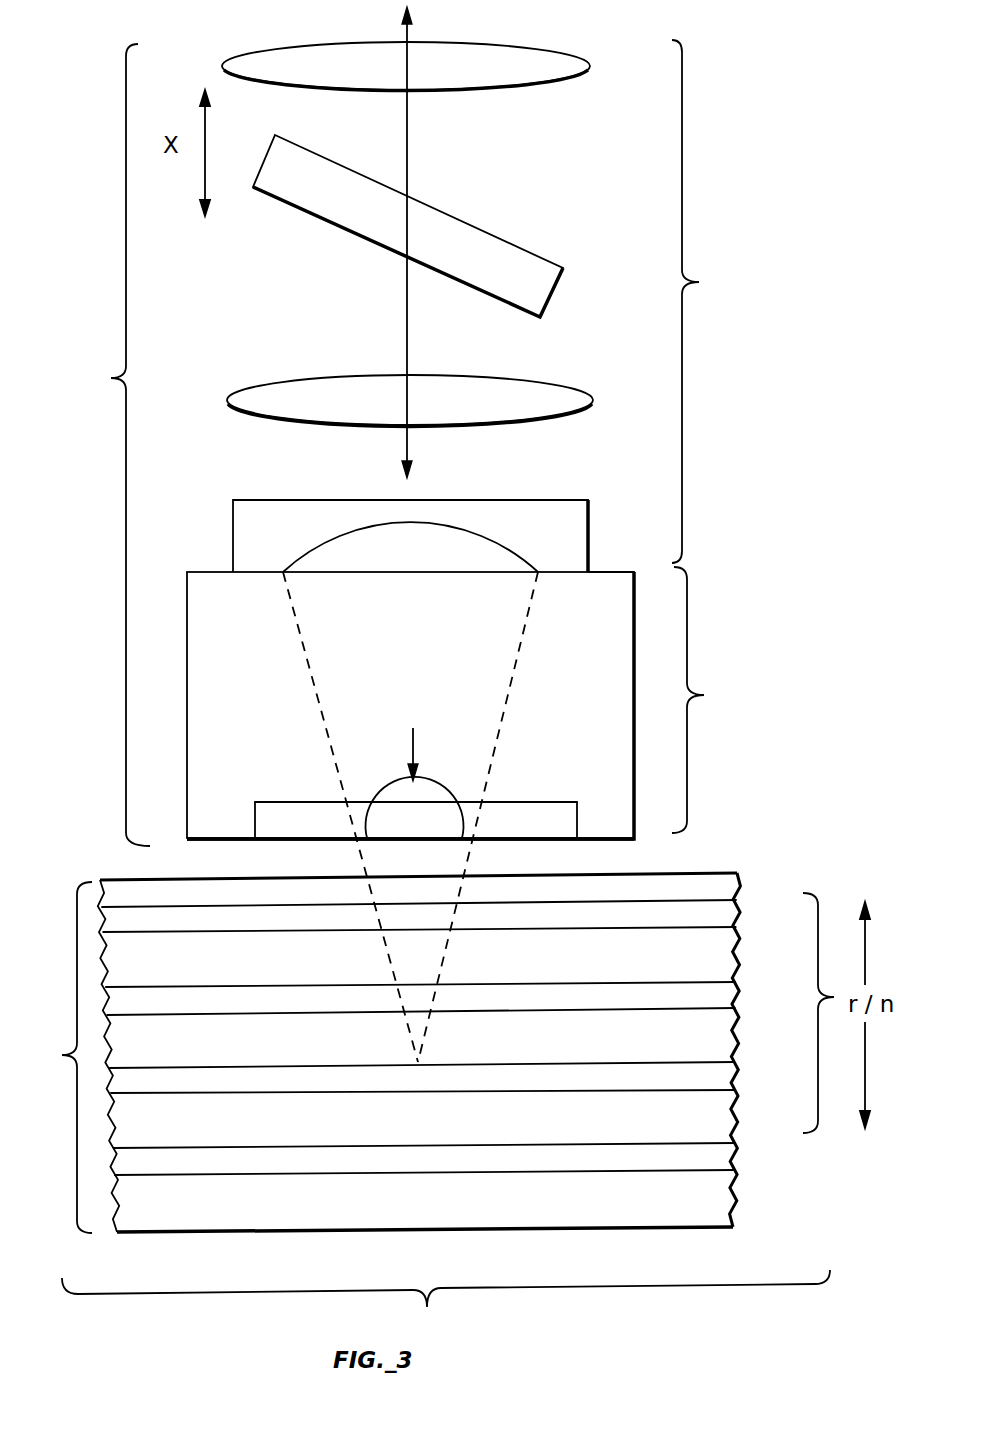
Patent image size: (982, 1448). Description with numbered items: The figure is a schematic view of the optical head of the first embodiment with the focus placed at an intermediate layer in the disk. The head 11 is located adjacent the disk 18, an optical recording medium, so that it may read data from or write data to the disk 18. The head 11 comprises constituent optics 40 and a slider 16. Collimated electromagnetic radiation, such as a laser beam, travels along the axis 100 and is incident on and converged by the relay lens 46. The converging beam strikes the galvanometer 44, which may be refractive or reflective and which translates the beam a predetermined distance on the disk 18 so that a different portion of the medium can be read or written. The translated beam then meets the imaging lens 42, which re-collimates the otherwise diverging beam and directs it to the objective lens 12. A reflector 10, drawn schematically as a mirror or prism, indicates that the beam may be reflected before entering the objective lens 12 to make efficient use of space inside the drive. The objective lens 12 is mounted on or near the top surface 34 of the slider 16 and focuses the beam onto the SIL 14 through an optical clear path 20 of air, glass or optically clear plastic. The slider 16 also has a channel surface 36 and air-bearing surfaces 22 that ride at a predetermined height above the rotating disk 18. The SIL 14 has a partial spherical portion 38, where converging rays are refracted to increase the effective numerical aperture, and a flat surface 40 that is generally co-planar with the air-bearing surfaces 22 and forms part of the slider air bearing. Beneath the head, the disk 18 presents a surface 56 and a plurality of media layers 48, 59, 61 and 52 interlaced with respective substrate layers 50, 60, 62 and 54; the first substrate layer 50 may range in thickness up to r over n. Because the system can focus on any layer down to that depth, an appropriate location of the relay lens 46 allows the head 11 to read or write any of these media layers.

The reflector 10 is at (548, 497).
The head 11 is at (114, 445).
The objective lens 12 is at (427, 522).
The SIL 14 is at (440, 776).
The slider 16 is at (710, 700).
The disk 18 is at (413, 1047).
The optical clear path 20 is at (417, 614).
The air-bearing surfaces 22 is at (228, 841).
The top surface 34 is at (603, 568).
The channel surface 36 is at (322, 806).
The partial spherical portion 38 is at (400, 782).
The flat surface 40 is at (415, 858).
The imaging lens 42 is at (517, 421).
The galvanometer 44 is at (513, 247).
The relay lens 46 is at (512, 87).
The first media layer 48 is at (738, 913).
The first substrate layer 50 is at (735, 959).
The second media layer 52 is at (737, 1156).
The substrate layer 54 is at (737, 1201).
The top surface of medium 56 is at (740, 886).
The media layer 59 is at (736, 996).
The substrate layer 60 is at (736, 1039).
The media layer 61 is at (738, 1078).
The substrate layer 62 is at (737, 1119).
The optical axis 100 is at (407, 124).